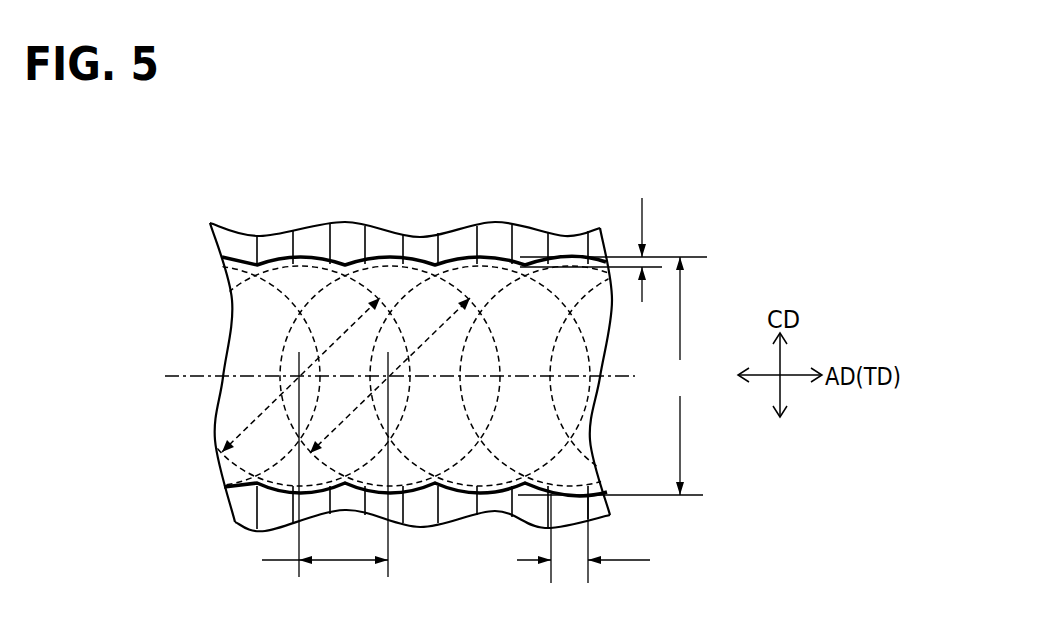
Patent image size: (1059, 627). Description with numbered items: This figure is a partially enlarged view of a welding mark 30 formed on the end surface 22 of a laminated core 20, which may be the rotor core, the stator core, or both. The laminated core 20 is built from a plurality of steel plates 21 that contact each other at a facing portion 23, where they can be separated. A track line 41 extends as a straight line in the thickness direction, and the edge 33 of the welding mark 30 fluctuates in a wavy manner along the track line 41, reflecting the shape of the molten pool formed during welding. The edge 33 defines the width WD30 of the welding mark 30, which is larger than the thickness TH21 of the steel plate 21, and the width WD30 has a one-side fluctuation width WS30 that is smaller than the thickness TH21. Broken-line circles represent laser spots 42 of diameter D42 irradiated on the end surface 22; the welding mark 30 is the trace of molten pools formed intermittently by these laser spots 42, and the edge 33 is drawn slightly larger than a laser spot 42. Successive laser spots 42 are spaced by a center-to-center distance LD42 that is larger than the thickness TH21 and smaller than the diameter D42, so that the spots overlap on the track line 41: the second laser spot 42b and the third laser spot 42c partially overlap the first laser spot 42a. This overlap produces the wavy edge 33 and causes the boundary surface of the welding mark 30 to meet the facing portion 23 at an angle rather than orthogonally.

The laminated core 20 is at (189, 253).
The steel plate 21 is at (568, 512).
The end surface 22 is at (242, 247).
The facing portion 23 is at (545, 513).
The welding mark 30 is at (287, 262).
The edge 33 is at (357, 262).
The track line 41 is at (202, 372).
The laser spot 42 is at (435, 294).
The first laser spot 42a is at (380, 268).
The second laser spot 42b is at (470, 268).
The third laser spot 42c is at (570, 325).
The diameter of laser spot D42 is at (260, 418).
The distance between laser spots LD42 is at (311, 474).
The one-side fluctuation width WS30 is at (613, 250).
The width of welding mark WD30 is at (618, 376).
The thickness of steel plate TH21 is at (592, 545).